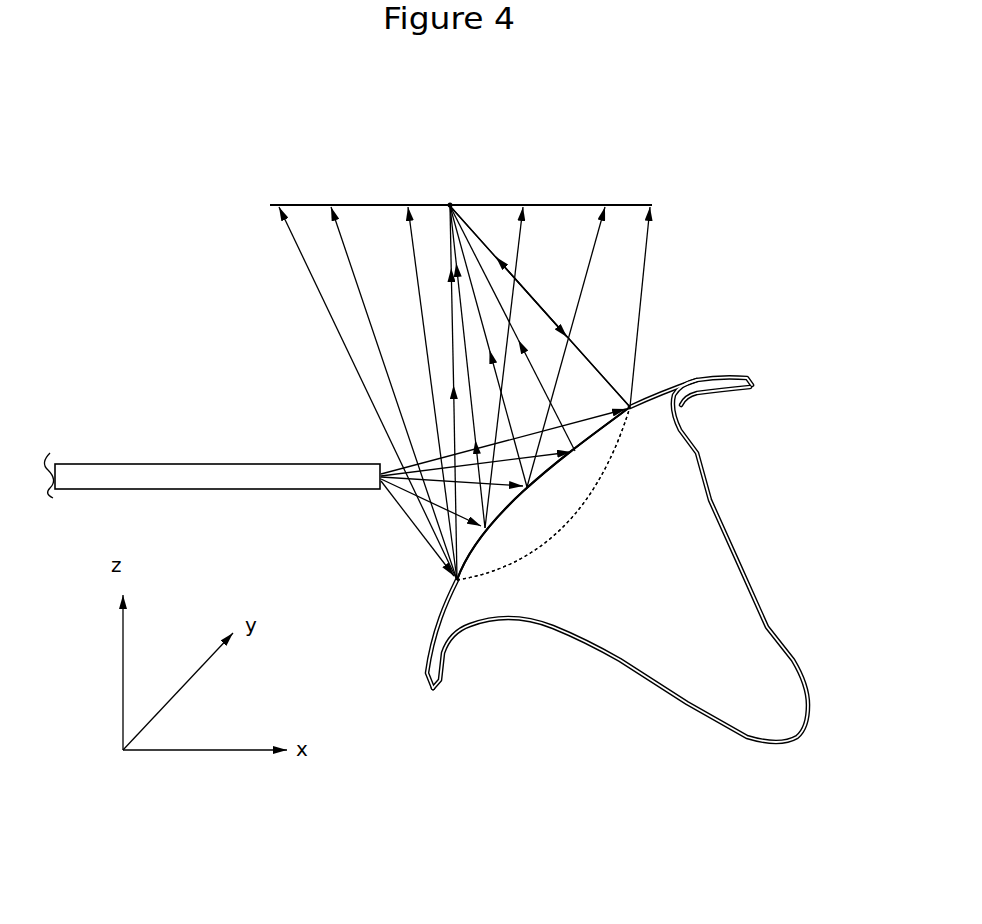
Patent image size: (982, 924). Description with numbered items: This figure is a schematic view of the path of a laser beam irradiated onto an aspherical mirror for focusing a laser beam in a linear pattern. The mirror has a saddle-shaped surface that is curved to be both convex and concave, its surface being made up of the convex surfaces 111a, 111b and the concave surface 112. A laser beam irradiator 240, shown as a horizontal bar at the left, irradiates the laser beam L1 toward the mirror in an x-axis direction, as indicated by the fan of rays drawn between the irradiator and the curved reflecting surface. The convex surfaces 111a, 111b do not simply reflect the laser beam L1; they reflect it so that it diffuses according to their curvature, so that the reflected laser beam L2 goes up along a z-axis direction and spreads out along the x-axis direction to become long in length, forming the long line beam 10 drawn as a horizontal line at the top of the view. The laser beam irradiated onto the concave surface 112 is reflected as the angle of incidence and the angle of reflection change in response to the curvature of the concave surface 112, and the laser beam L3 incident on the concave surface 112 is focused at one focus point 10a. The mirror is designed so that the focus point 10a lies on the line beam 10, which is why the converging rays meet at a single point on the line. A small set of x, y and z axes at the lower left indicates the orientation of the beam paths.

The line beam 10 is at (352, 204).
The focus point 10a is at (450, 204).
The laser beam L1 is at (403, 507).
The laser beam L2 is at (645, 255).
The laser beam L3 is at (512, 273).
The convex surface 111a is at (697, 380).
The convex surface 111b is at (632, 438).
The concave surface 112 is at (587, 503).
The laser beam irradiator 240 is at (173, 463).